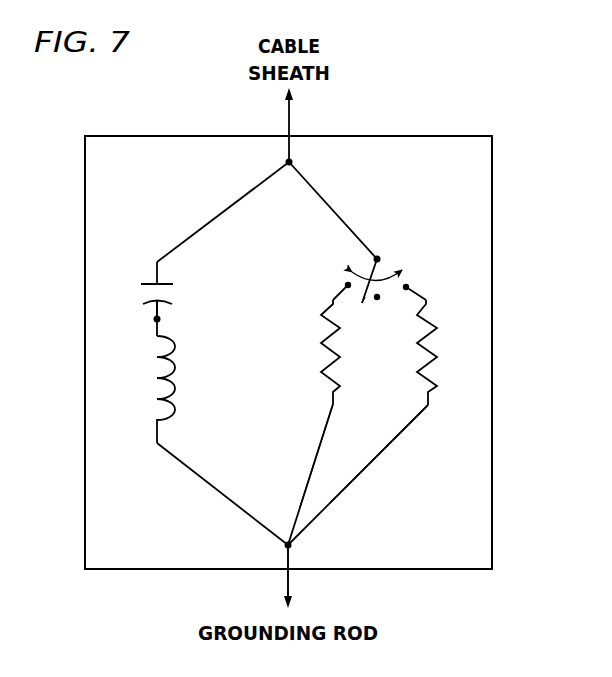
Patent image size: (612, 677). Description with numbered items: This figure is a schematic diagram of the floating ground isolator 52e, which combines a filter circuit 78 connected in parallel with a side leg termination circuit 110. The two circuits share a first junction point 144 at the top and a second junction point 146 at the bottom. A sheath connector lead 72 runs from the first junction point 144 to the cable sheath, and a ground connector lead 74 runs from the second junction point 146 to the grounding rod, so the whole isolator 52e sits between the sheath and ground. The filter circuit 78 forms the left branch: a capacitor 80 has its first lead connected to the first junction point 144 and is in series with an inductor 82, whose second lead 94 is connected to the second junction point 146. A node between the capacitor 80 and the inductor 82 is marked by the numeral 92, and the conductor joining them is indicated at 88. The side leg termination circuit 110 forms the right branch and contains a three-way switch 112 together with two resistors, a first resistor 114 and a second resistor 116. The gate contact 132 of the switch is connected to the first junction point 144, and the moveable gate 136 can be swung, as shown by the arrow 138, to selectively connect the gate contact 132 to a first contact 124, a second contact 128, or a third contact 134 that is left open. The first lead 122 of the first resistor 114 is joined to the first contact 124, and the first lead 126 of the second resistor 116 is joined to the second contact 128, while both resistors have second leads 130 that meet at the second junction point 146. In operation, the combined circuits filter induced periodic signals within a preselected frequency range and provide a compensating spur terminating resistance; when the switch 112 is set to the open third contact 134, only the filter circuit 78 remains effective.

The floating ground isolator 52e is at (494, 210).
The sheath connector lead 72 is at (286, 153).
The first junction point 144 is at (295, 160).
The three-way switch 112 is at (439, 226).
The capacitor 80 is at (150, 301).
The conductor between capacitor and inductor 88 is at (162, 308).
The node 92 is at (152, 328).
The inductor 82 is at (178, 370).
The second lead of the inductor 94 is at (200, 480).
The gate contact 132 is at (379, 256).
The arrow 138 is at (355, 268).
The first contact 124 is at (346, 285).
The second contact 128 is at (409, 286).
The third contact 134 is at (381, 298).
The gate 136 is at (365, 299).
The first lead of the first resistor 122 is at (334, 302).
The first lead of the second resistor 126 is at (429, 299).
The first resistor 114 is at (333, 370).
The second resistor 116 is at (427, 368).
The second leads 130 is at (352, 483).
The second junction point 146 is at (285, 547).
The ground connector lead 74 is at (293, 558).
The filter circuit 78 is at (166, 540).
The side leg termination circuit 110 is at (462, 490).